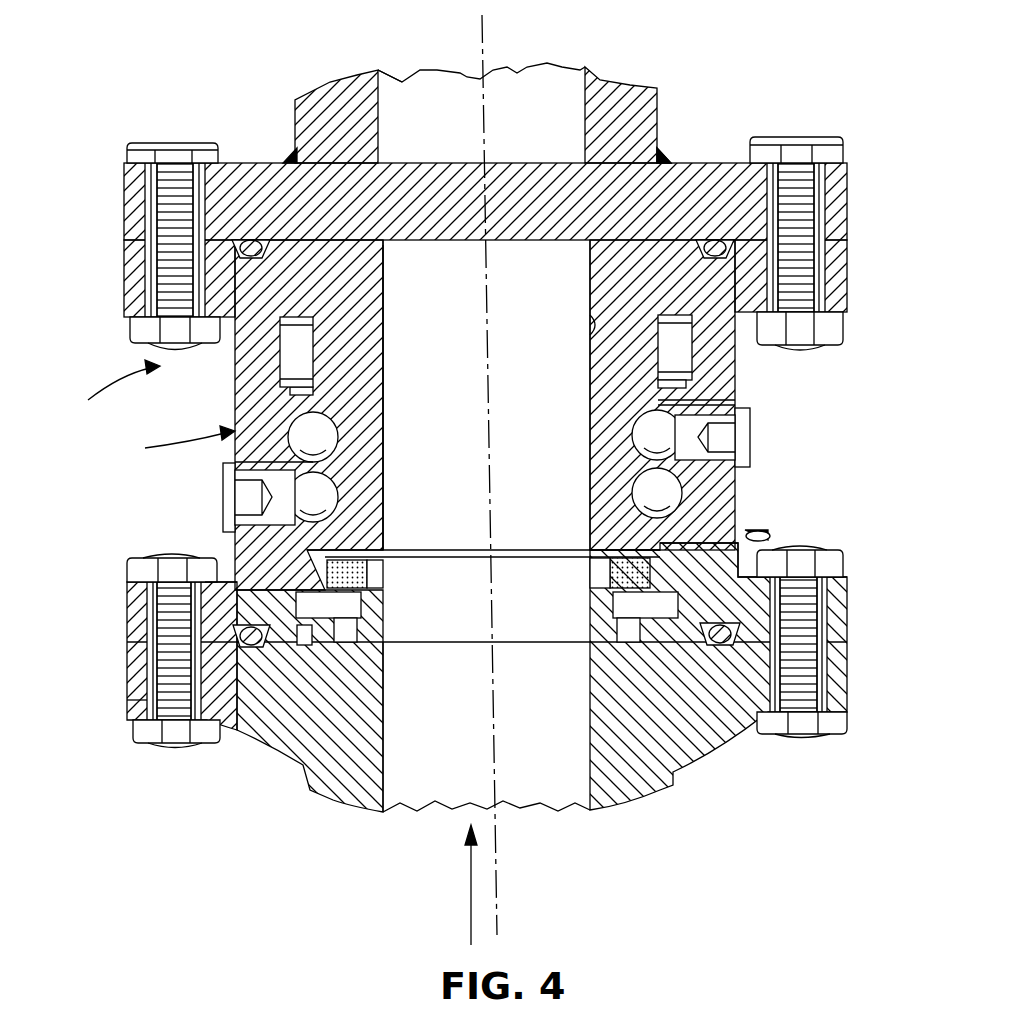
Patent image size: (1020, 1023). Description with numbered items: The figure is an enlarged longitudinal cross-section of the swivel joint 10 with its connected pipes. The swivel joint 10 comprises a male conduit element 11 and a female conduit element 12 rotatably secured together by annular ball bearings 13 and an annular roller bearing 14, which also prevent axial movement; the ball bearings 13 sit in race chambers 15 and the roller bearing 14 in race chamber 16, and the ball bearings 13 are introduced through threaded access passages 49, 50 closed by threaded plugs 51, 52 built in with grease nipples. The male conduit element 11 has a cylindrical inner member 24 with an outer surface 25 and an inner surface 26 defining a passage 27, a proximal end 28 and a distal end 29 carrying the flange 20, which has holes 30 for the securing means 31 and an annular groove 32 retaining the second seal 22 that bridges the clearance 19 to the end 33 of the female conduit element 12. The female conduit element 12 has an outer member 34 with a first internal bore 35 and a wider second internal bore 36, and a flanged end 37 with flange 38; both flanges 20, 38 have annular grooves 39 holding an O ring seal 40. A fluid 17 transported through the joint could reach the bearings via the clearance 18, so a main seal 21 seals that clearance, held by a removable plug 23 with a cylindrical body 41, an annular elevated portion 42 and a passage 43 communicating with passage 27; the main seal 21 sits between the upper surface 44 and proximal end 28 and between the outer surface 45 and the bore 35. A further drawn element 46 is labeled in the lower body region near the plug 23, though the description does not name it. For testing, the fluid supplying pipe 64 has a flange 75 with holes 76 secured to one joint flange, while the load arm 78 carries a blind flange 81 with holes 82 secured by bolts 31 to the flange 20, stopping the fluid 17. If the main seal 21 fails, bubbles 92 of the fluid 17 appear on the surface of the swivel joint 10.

The swivel joint 10 is at (102, 391).
The male conduit element 11 is at (288, 263).
The female conduit element 12 is at (170, 444).
The annular ball bearings 13 is at (640, 440).
The annular roller bearing 14 is at (683, 350).
The ball bearing race chambers 15 is at (340, 455).
The roller bearing race chamber 16 is at (283, 340).
The fluid 17 is at (471, 903).
The clearance 18 is at (680, 495).
The clearance 19 is at (810, 343).
The flange 20 is at (213, 253).
The main seal 21 is at (385, 688).
The second seal 22 is at (752, 262).
The removable plug 23 is at (383, 627).
The inner member 24 is at (353, 317).
The outer surface 25 is at (657, 383).
The inner surface 26 is at (588, 326).
The passage 27 is at (528, 257).
The proximal end 28 is at (355, 545).
The distal end 29 is at (378, 71).
The holes 30 is at (152, 278).
The securing means 31 is at (155, 200).
The annular groove 32 is at (255, 240).
The end 33 is at (130, 330).
The outer member 34 is at (250, 460).
The first internal bore 35 is at (233, 545).
The second internal bore 36 is at (300, 392).
The flanged end 37 is at (150, 645).
The flange 38 is at (750, 600).
The annular grooves 39 is at (752, 660).
The O ring seal 40 is at (713, 240).
The cylindrical body 41 is at (305, 648).
The annular elevated portion 42 is at (372, 578).
The passage 43 is at (527, 627).
The upper surface 44 is at (195, 610).
The outer surface 45 is at (612, 558).
The retaining ring 46 is at (345, 645).
The threaded access passage 49 is at (698, 413).
The threaded access passage 50 is at (300, 440).
The threaded plug 51 is at (717, 428).
The threaded plug 52 is at (240, 493).
The fluid supplying pipe 64 is at (383, 812).
The flange 75 is at (200, 740).
The holes 76 is at (143, 707).
The load arm 78 is at (330, 90).
The blind flange 81 is at (664, 183).
The holes 82 is at (130, 160).
The bubbles 92 is at (775, 540).